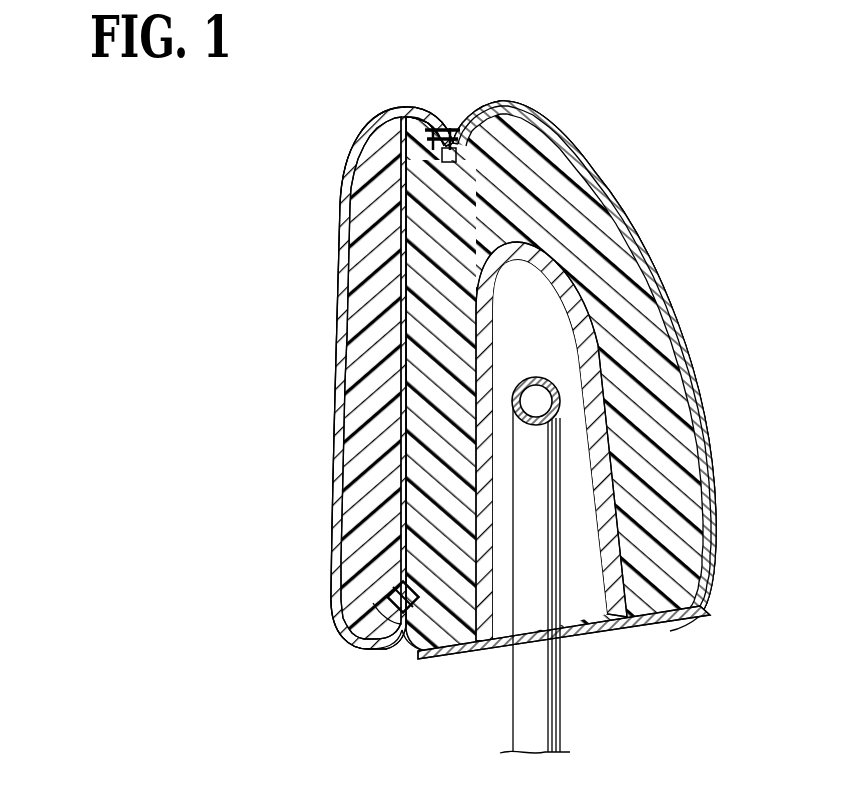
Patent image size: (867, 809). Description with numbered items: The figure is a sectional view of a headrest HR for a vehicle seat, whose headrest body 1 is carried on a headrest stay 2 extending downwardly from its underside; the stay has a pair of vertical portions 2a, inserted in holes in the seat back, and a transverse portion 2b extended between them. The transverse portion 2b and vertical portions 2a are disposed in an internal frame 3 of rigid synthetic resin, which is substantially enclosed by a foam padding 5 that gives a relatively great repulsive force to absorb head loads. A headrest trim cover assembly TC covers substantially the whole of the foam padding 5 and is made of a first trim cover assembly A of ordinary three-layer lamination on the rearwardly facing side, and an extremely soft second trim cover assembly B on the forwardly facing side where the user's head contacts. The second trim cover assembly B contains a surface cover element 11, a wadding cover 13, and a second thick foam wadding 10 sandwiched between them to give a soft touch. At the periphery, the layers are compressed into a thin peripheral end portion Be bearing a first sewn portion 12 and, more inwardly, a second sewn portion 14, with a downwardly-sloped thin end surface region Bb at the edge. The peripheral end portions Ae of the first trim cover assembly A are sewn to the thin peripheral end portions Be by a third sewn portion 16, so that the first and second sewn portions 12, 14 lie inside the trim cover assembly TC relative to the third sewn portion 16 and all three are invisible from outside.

The headrest body 1 is at (296, 204).
The headrest stay 2 is at (511, 683).
The vertical portions 2a is at (550, 710).
The transverse portion 2b is at (556, 386).
The internal frame 3 is at (592, 544).
The foam padding 5 is at (617, 219).
The second thick foam wadding 10 is at (343, 409).
The surface cover element 11 is at (335, 372).
The wadding cover 13 is at (388, 452).
The first sewn portion 12 is at (466, 138).
The second sewn portion 14 is at (407, 118).
The third sewn portion 16 is at (466, 128).
The first trim cover assembly A is at (686, 274).
The second trim cover assembly B is at (238, 367).
The headrest HR is at (316, 141).
The headrest trim cover assembly TC is at (625, 152).
The downwardly-sloped thin end surface region Bb is at (383, 124).
The thin peripheral end portion Be is at (424, 105).
The peripheral end portions Ae is at (478, 92).